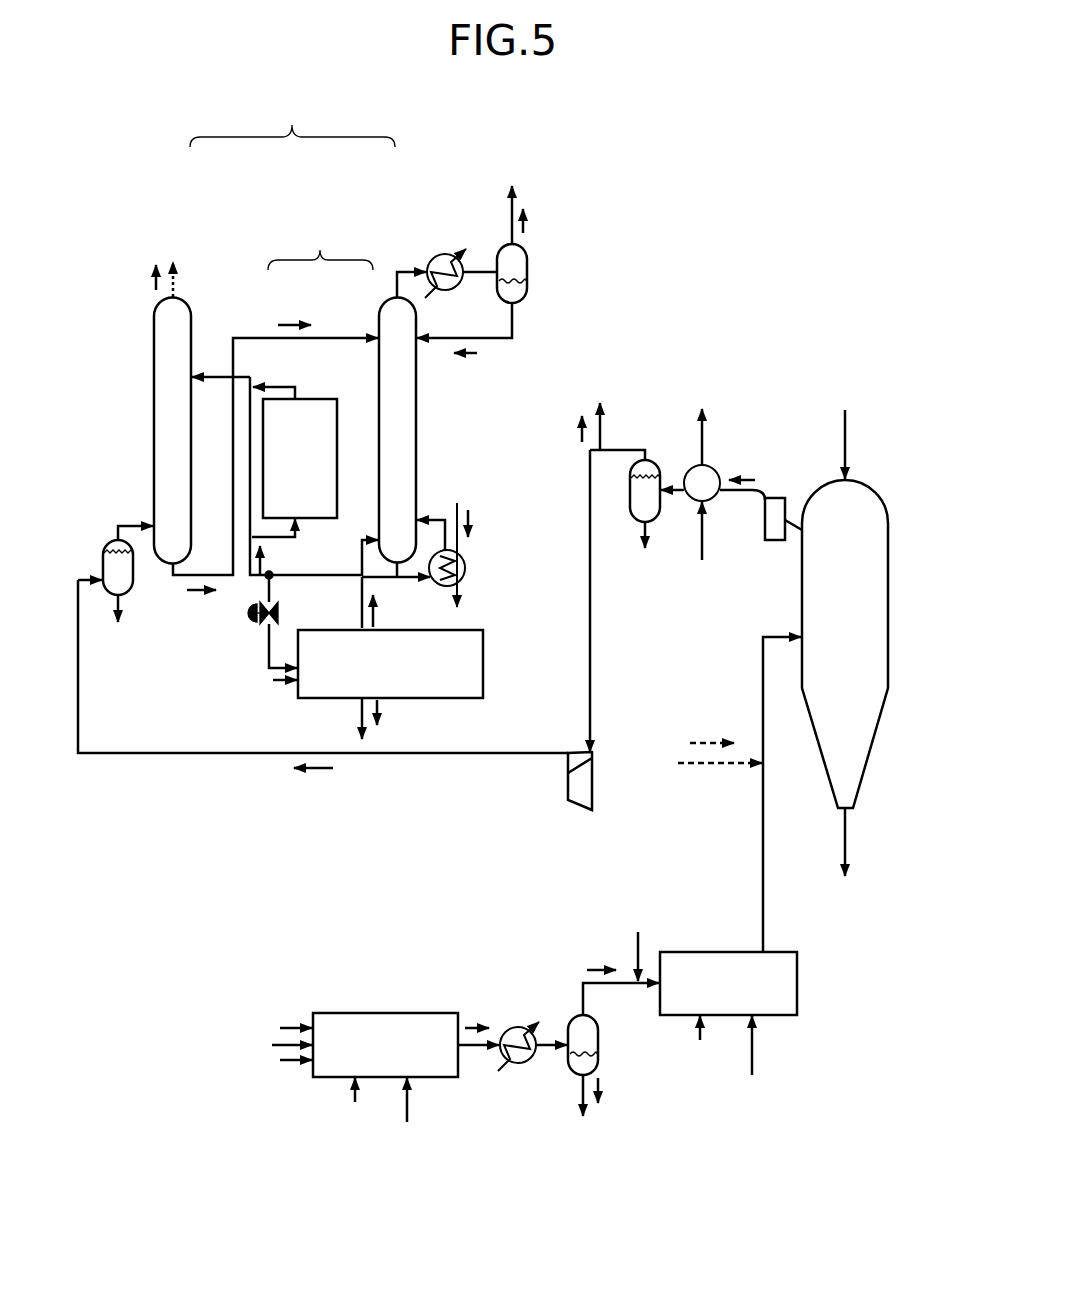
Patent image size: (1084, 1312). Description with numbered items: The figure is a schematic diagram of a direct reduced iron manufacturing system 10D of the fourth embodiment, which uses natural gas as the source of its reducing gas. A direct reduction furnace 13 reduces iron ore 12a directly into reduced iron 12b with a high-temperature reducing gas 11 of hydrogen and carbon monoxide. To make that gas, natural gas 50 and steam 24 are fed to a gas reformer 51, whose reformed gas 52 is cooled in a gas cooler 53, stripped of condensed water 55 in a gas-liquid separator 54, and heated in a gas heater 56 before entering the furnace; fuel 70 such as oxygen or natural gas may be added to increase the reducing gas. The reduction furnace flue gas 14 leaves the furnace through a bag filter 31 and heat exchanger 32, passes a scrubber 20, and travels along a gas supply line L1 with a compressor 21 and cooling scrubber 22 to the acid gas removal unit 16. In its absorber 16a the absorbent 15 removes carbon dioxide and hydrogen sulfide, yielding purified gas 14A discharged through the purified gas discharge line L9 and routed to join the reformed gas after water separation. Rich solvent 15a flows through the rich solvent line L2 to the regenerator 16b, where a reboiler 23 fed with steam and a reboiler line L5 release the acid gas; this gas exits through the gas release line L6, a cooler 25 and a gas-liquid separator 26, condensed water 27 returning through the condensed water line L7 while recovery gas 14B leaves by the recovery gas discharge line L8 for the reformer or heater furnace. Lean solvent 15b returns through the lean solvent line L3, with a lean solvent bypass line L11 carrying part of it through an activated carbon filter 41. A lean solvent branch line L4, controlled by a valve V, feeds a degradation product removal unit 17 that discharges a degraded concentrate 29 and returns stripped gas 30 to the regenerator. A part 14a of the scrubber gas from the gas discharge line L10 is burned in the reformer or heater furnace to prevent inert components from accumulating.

The direct reduced iron manufacturing system 10D is at (540, 160).
The acid gas removal unit 16 is at (292, 123).
The absorber 16a is at (184, 298).
The regenerator 16b is at (386, 298).
The purified gas discharge line L9 is at (176, 298).
The purified gas 14A is at (156, 290).
The acid gas absorbent 15 is at (320, 248).
The rich solvent 15a is at (287, 322).
The lean solvent 15b is at (262, 553).
The lean solvent line L3 is at (218, 375).
The lean solvent bypass line L11 is at (270, 388).
The filter 41 is at (308, 399).
The cooling scrubber 22 is at (104, 558).
The rich solvent line L2 is at (160, 572).
The valve V is at (250, 622).
The lean solvent branch line L4 is at (267, 655).
The degradation product removal unit 17 is at (486, 671).
The degraded concentrate 29 is at (380, 716).
The stripped gas 30 is at (376, 613).
The reduction furnace flue gas 14 is at (318, 772).
The cooler 25 is at (438, 252).
The gas release line L6 is at (406, 268).
The recovery gas discharge line L8 is at (511, 208).
The recovery gas 14B is at (526, 224).
The gas-liquid separator 26 is at (528, 270).
The condensed water line L7 is at (513, 326).
The condensed water 27 is at (472, 359).
The reboiler line L5 is at (440, 518).
The steam 24 is at (470, 520).
The reboiler 23 is at (467, 568).
The gas discharge line L10 is at (598, 425).
The part of the gas emitted from the scrubber 14a is at (582, 432).
The scrubber 20 is at (630, 482).
The heat exchanger 32 is at (687, 468).
The bag filter 31 is at (775, 498).
The iron ore 12a is at (845, 431).
The direct reduction furnace 13 is at (890, 556).
The reducing gas 11 is at (770, 632).
The fuel 70 is at (705, 738).
The gas supply line L1 is at (593, 668).
The compressor 21 is at (578, 808).
The reduced iron 12b is at (845, 858).
The natural gas 50 is at (283, 1025).
The gas reformer 51 is at (385, 1013).
The reformed gas 52 is at (466, 1022).
The gas cooler 53 is at (516, 1026).
The gas-liquid separator 54 is at (598, 1047).
The condensed water 55 is at (600, 1090).
The gas heater 56 is at (692, 952).